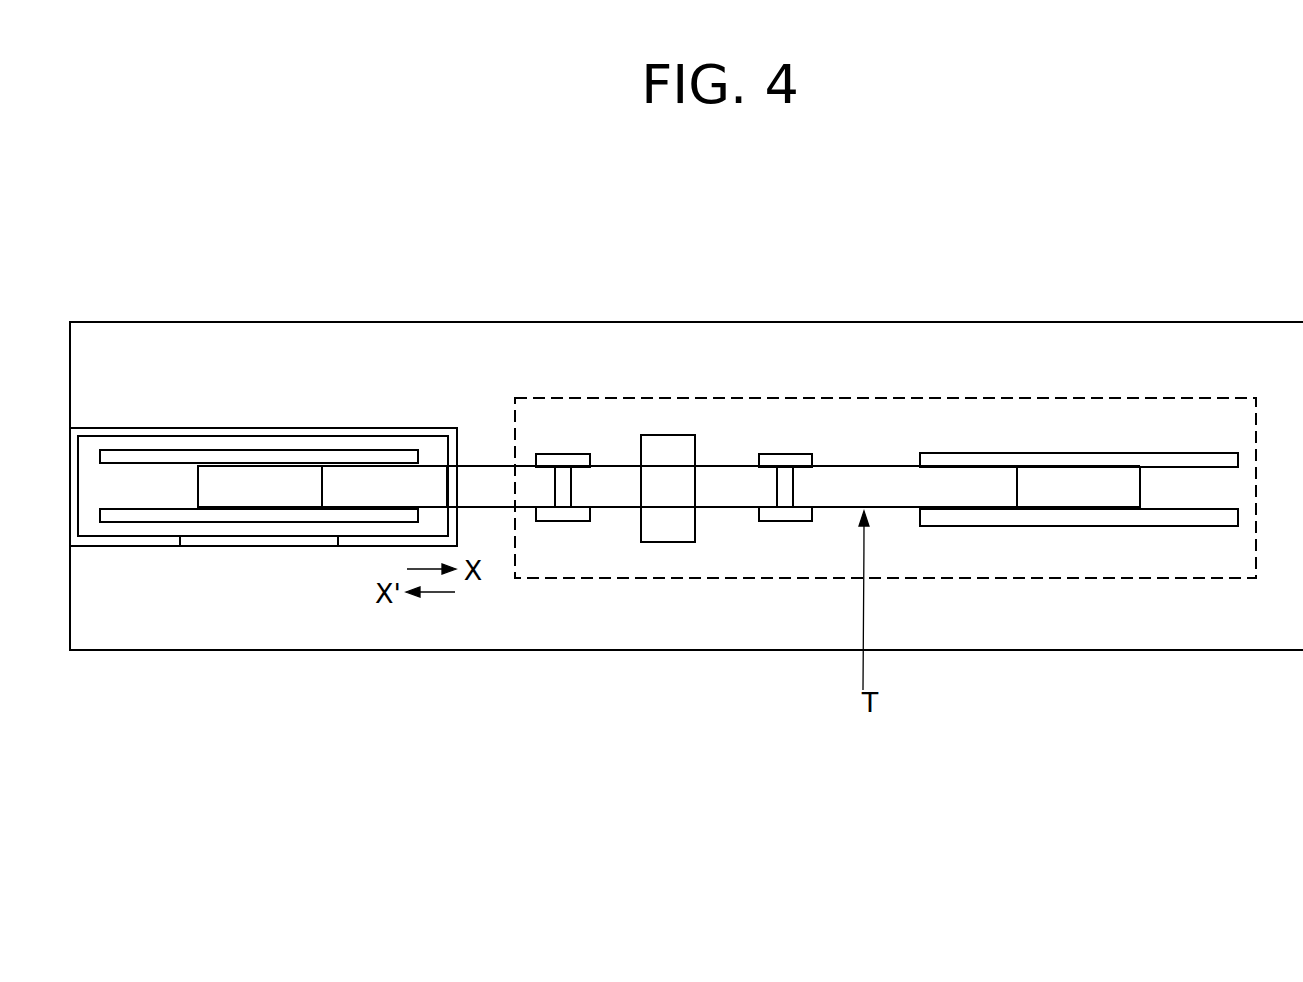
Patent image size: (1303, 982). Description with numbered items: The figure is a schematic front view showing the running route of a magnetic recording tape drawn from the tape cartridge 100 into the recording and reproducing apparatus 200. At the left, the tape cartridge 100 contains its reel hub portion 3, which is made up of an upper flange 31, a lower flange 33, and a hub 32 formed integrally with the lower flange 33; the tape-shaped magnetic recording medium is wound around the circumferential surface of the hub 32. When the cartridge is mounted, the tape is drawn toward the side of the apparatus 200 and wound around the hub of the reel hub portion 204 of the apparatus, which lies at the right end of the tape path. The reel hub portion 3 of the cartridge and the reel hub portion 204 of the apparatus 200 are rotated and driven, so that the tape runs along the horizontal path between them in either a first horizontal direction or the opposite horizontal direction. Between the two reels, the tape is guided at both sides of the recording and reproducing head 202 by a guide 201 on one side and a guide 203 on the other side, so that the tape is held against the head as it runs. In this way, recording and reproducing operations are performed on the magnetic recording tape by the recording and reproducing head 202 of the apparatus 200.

The recording and reproducing apparatus 200 is at (871, 323).
The tape cartridge 100 is at (269, 421).
The reel hub portion 3 is at (365, 522).
The upper flange 31 is at (127, 455).
The hub 32 is at (245, 497).
The lower flange 33 is at (118, 517).
The guide 201 is at (561, 454).
The recording and reproducing head 202 is at (670, 435).
The guide 203 is at (785, 454).
The reel hub portion 204 is at (1117, 448).